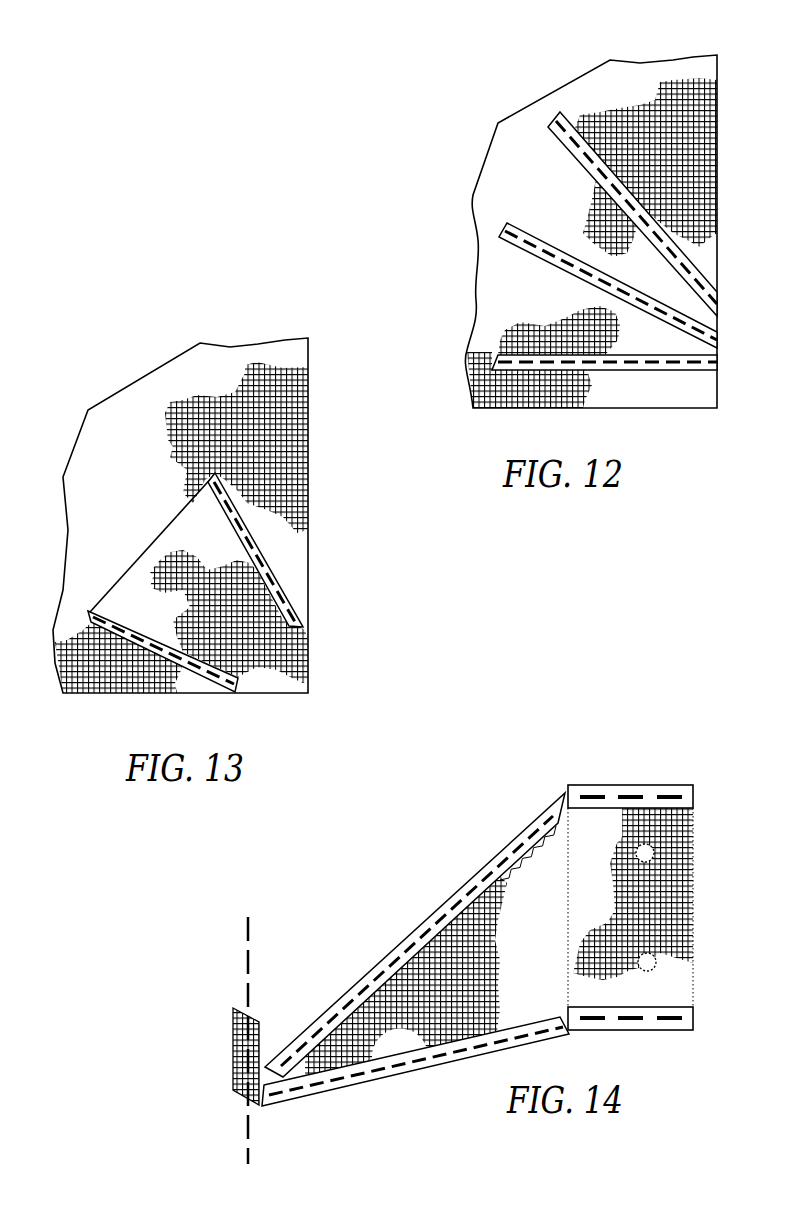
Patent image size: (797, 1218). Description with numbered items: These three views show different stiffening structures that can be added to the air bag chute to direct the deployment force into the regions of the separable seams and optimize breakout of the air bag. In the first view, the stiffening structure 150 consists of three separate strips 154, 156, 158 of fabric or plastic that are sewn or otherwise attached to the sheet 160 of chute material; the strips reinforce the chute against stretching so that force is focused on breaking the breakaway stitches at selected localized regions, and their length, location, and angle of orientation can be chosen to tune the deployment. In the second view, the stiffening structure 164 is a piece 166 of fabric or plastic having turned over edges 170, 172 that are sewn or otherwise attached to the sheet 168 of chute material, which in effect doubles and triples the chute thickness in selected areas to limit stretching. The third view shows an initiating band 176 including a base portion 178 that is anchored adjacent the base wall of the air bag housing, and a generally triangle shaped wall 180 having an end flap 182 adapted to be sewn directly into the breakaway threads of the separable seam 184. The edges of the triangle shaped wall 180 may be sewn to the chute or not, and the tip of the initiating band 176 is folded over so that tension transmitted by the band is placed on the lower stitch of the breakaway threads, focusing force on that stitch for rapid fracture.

In FIG. 12, the stiffening structure 150 is at (496, 103).
In FIG. 12, the strip 154 is at (495, 360).
In FIG. 12, the strip 156 is at (502, 232).
In FIG. 12, the strip 158 is at (554, 118).
In FIG. 12, the sheet 160 is at (675, 163).
In FIG. 13, the stiffening structure 164 is at (71, 408).
In FIG. 13, the piece 166 is at (127, 593).
In FIG. 13, the sheet 168 is at (212, 422).
In FIG. 13, the turned over edge 170 is at (145, 635).
In FIG. 13, the turned over edge 172 is at (258, 542).
In FIG. 14, the initiating band 176 is at (513, 822).
In FIG. 14, the base portion 178 is at (641, 835).
In FIG. 14, the triangle shaped wall 180 is at (438, 970).
In FIG. 14, the end flap 182 is at (232, 1052).
In FIG. 14, the separable seam 184 is at (251, 958).